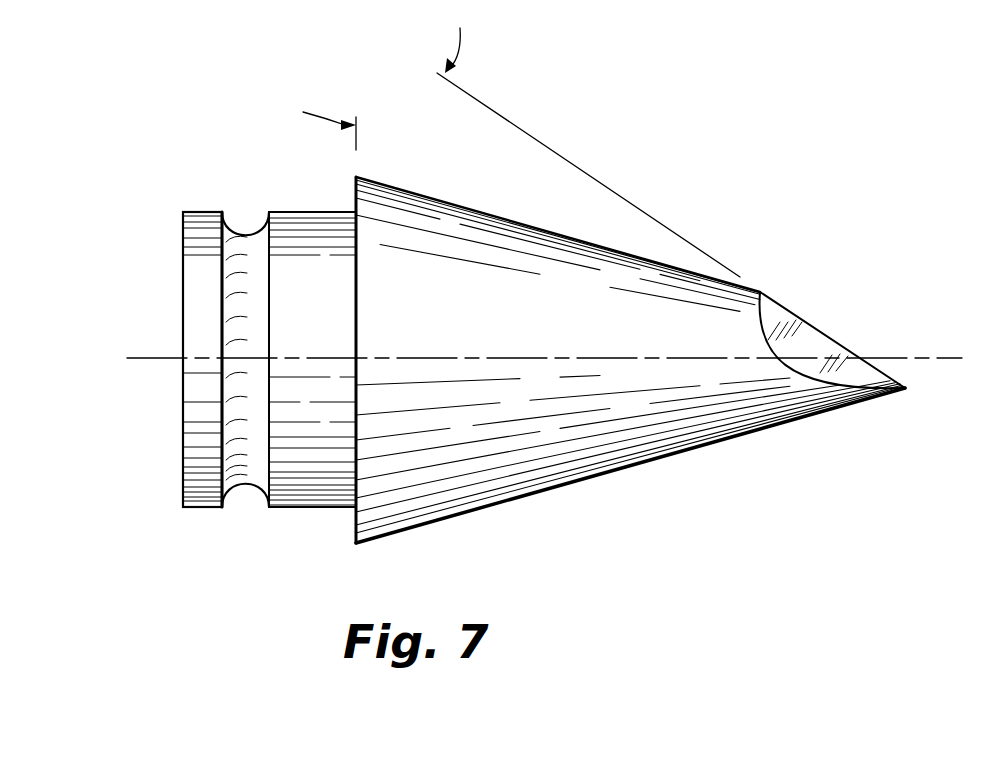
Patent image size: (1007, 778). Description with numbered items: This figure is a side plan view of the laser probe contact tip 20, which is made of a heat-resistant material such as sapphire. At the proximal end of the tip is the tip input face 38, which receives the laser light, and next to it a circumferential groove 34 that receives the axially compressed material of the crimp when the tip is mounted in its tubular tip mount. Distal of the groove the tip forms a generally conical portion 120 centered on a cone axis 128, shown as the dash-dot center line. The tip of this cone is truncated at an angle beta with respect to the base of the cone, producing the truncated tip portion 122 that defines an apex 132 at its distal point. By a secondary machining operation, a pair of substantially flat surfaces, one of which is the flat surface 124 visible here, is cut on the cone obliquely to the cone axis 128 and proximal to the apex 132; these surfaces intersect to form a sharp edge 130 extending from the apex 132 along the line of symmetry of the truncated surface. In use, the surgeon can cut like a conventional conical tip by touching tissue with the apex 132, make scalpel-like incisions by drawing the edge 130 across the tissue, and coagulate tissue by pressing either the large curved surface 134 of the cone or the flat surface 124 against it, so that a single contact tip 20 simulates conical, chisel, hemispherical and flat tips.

The contact tip 20 is at (760, 220).
The circumferential groove 34 is at (237, 226).
The tip input face 38 is at (183, 232).
The conical portion 120 is at (465, 197).
The truncated tip portion 122 is at (802, 292).
The flat surface 124 is at (863, 370).
The cone axis 128 is at (960, 358).
The edge 130 is at (838, 336).
The apex 132 is at (908, 390).
The curved surface 134 is at (772, 407).